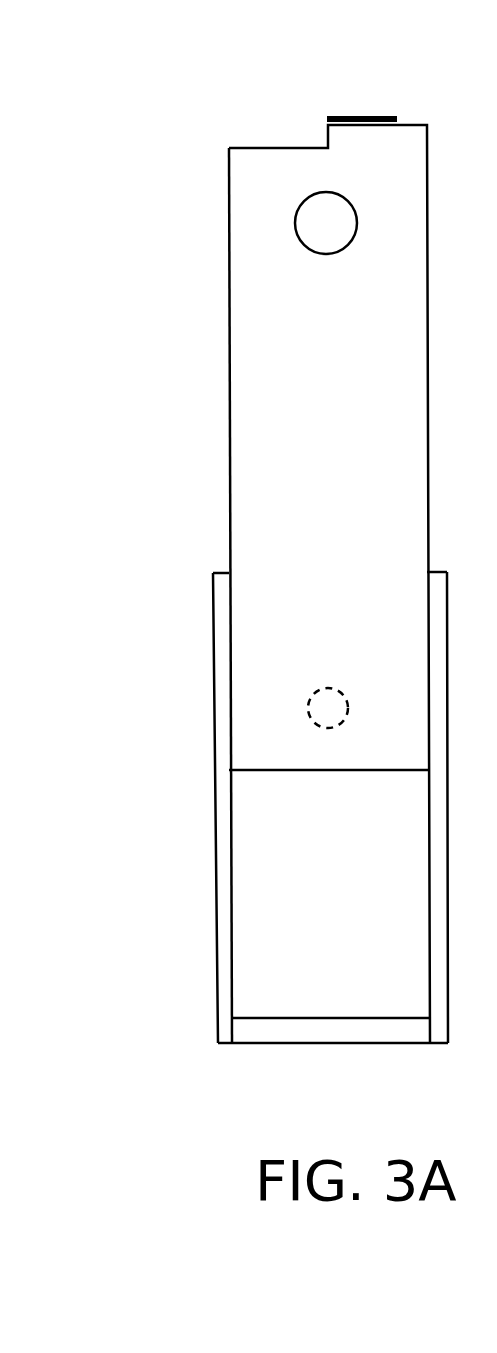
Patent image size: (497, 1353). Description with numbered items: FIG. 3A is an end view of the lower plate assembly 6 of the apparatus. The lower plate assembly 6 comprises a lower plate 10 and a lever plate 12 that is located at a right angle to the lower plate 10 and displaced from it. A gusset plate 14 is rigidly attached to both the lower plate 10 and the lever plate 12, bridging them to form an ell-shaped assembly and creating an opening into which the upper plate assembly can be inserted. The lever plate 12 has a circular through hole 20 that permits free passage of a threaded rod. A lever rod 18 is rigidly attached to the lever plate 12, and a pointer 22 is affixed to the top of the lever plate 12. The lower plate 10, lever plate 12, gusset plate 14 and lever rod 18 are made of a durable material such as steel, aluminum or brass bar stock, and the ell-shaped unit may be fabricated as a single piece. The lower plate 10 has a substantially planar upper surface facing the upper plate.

The lower plate assembly 6 is at (202, 428).
The lower plate 10 is at (343, 1030).
The lever plate 12 is at (229, 274).
The gusset plate 14 is at (222, 762).
The lever rod 18 is at (320, 690).
The circular through hole 20 is at (310, 197).
The pointer 22 is at (352, 117).